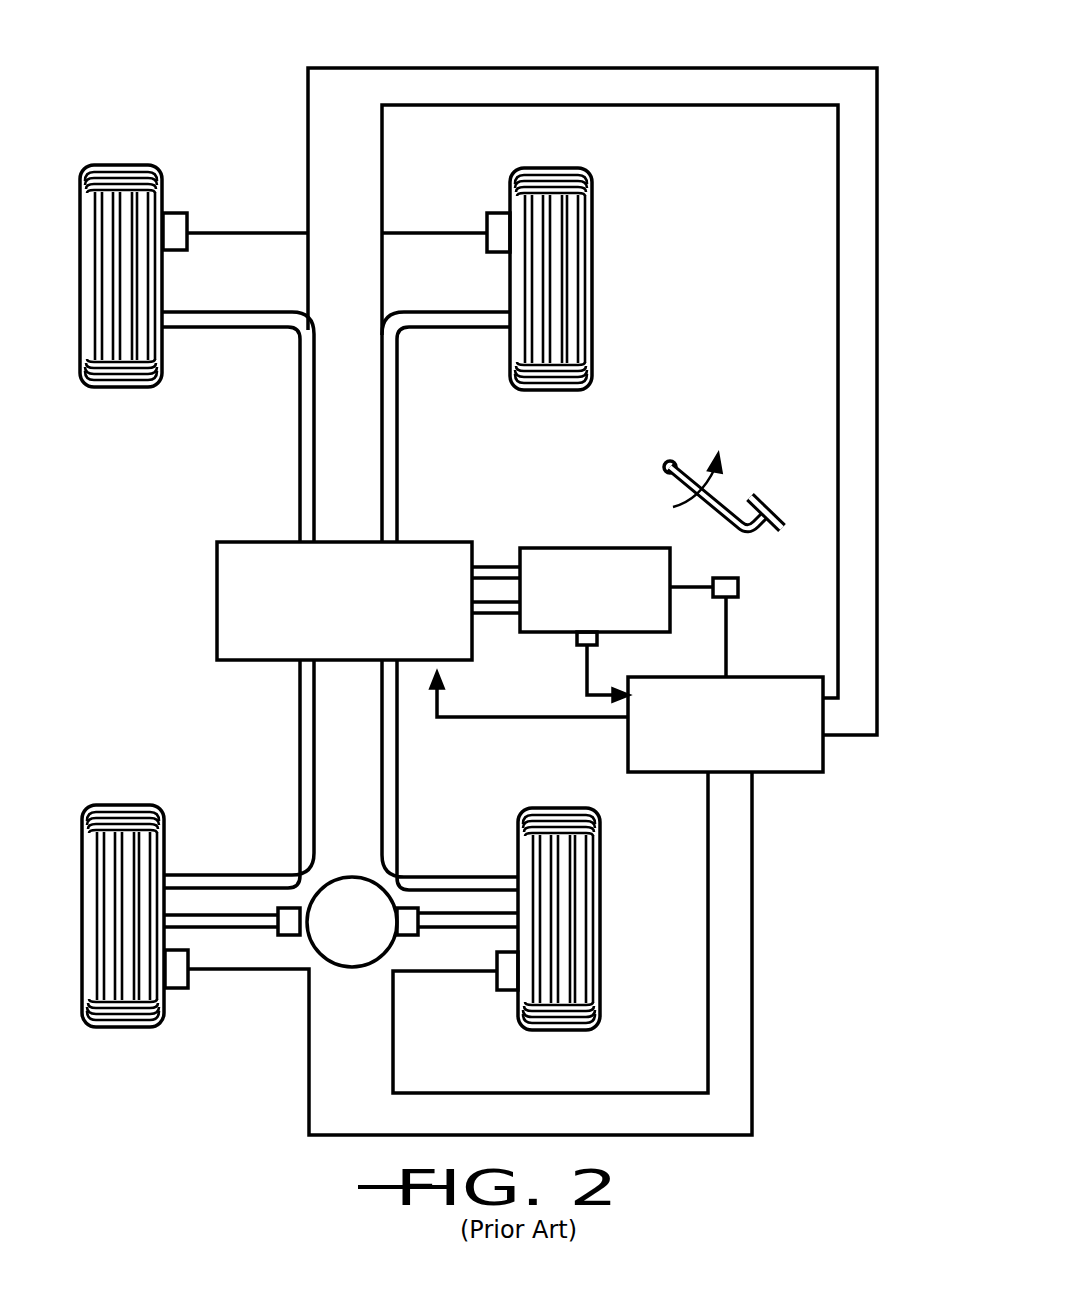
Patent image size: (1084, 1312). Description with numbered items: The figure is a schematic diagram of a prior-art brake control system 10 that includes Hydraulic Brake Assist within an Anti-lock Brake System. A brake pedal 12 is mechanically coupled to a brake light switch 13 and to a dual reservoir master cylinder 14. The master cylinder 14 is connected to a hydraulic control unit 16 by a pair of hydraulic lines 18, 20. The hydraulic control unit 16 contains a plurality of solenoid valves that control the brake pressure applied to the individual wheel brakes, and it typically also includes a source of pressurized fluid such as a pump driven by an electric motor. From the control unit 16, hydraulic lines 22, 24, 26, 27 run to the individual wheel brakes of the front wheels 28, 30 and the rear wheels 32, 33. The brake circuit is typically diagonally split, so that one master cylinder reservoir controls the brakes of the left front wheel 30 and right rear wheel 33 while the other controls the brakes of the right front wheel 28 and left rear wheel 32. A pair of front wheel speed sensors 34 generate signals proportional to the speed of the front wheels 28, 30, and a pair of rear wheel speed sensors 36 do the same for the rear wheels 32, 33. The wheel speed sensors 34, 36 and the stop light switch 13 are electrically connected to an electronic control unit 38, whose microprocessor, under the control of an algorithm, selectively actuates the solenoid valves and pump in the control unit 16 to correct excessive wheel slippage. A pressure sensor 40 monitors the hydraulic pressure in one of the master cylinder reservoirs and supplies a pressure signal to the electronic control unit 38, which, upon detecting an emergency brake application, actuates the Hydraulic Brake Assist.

The brake control system 10 is at (372, 64).
The brake pedal 12 is at (736, 503).
The brake light switch 13 is at (738, 580).
The dual reservoir master cylinder 14 is at (602, 548).
The hydraulic control unit 16 is at (217, 580).
The hydraulic line 18 is at (497, 565).
The hydraulic line 20 is at (500, 613).
The hydraulic line 22 is at (397, 412).
The hydraulic line 24 is at (300, 400).
The hydraulic line 26 is at (398, 748).
The hydraulic line 27 is at (300, 733).
The right front wheel 28 is at (590, 195).
The left front wheel 30 is at (125, 165).
The left rear wheel 32 is at (145, 805).
The right rear wheel 33 is at (600, 820).
The front wheel speed sensor 34 is at (187, 218).
The rear wheel speed sensor 36 is at (178, 990).
The electronic control unit 38 is at (790, 772).
The pressure sensor 40 is at (597, 638).